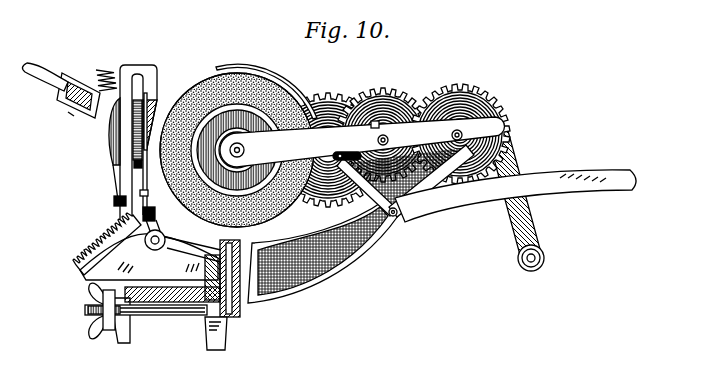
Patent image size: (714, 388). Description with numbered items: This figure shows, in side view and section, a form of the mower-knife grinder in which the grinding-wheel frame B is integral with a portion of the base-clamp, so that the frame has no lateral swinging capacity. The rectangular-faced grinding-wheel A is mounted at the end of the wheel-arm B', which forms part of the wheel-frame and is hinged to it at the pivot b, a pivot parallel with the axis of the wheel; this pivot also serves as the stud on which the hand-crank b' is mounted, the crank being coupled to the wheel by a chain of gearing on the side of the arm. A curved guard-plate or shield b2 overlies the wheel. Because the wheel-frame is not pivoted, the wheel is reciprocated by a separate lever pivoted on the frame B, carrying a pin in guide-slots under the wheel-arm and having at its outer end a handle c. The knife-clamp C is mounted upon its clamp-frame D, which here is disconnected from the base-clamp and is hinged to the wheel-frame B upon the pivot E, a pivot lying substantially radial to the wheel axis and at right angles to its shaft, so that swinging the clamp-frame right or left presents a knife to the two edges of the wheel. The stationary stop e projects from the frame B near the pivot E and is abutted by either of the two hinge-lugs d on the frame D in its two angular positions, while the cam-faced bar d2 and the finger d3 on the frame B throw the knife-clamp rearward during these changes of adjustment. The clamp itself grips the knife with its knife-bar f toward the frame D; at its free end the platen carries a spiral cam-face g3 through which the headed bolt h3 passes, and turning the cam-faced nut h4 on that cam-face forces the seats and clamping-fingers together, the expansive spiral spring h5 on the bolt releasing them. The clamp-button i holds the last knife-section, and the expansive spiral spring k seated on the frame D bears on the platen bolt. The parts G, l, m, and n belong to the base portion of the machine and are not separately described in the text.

The grinding-wheel A is at (237, 149).
The grinding-wheel frame B is at (361, 224).
The wheel-arm B' is at (362, 138).
The knife-clamp C is at (133, 136).
The clamp-frame D is at (149, 257).
The pivot E is at (238, 316).
The clamp bar G is at (172, 318).
The pivot b is at (463, 134).
The hand-crank b' is at (515, 199).
The curved guard-plate or shield b2 is at (266, 85).
The handle c is at (515, 186).
The lugs or ears d is at (144, 235).
The cam-faced bar d2 is at (156, 200).
The finger d3 is at (154, 218).
The stop e is at (193, 249).
The knife-bar f is at (134, 165).
The spiral cam-face g3 is at (78, 82).
The headed bolt h3 is at (68, 112).
The cam-faced nut h4 is at (45, 85).
The expansive spiral spring h5 is at (106, 68).
The clamp-button i is at (116, 210).
The expansive spiral spring k is at (107, 244).
The leg l is at (216, 341).
The clamp screw m is at (84, 311).
The leg n is at (121, 329).